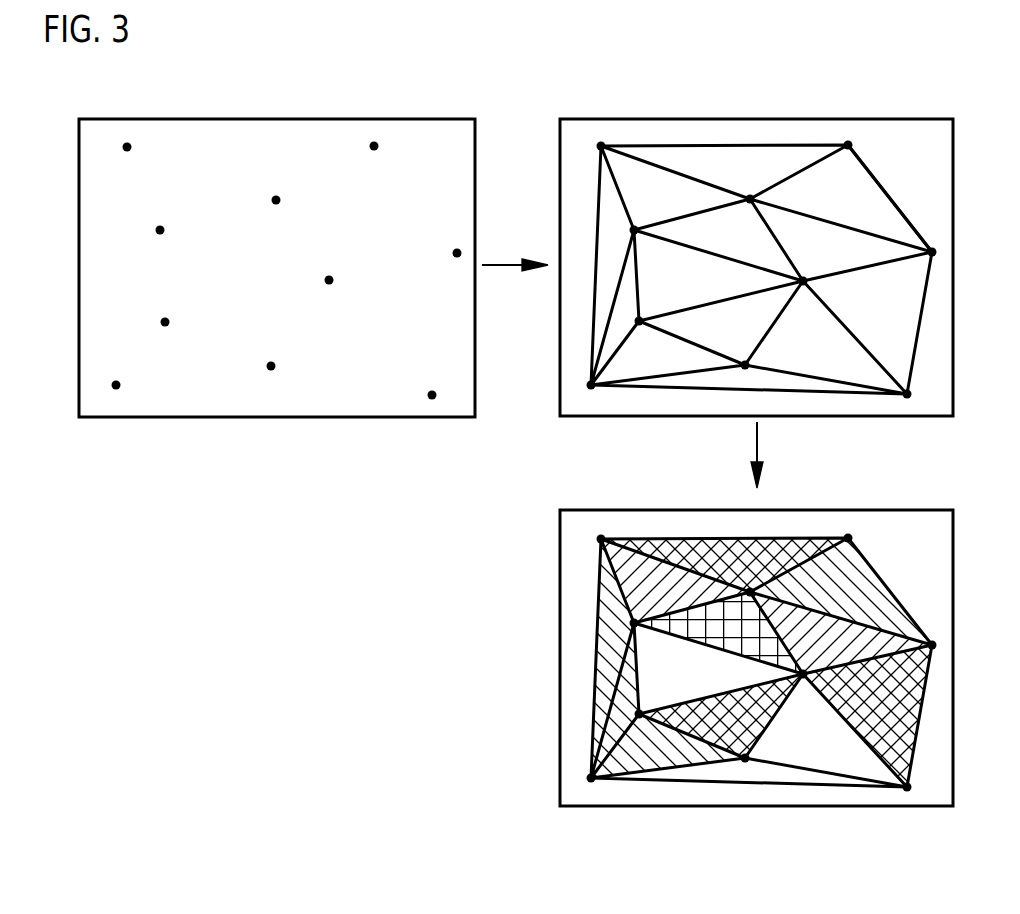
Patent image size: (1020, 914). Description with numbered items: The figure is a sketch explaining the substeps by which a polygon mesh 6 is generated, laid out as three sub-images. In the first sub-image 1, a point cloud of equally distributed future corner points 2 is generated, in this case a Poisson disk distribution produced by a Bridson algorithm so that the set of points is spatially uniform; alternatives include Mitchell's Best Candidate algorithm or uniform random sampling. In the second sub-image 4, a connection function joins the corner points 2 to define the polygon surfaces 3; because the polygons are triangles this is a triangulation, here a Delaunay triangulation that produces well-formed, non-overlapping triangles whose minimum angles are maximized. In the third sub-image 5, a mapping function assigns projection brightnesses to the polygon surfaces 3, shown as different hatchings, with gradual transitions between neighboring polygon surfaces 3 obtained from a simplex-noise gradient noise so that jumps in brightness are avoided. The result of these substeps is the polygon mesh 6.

The sub-image 1 is at (195, 418).
The corner points 2 is at (275, 200).
The polygon surfaces 3 is at (623, 320).
The sub-image 4 is at (560, 168).
The sub-image 5 is at (560, 589).
The polygon mesh 6 is at (892, 179).